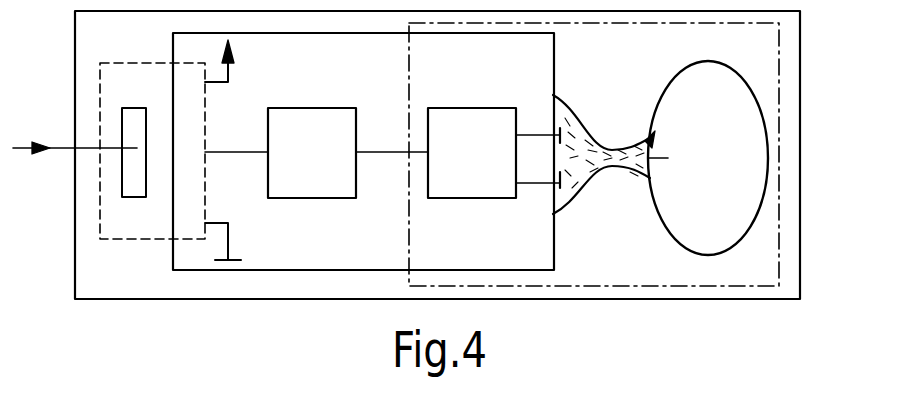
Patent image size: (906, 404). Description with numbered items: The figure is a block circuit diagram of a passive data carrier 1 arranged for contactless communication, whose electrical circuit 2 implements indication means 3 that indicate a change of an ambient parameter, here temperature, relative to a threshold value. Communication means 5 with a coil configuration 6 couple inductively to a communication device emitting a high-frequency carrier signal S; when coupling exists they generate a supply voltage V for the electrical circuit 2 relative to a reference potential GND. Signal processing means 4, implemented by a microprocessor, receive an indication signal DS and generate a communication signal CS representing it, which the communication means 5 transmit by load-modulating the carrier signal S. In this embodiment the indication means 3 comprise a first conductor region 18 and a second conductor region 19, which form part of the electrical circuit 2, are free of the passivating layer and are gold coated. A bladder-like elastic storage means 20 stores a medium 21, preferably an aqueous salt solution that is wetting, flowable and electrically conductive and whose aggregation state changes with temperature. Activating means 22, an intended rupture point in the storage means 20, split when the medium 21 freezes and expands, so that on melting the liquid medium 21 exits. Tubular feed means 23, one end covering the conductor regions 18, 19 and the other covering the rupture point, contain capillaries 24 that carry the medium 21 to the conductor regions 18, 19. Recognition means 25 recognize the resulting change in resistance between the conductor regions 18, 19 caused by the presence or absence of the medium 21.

The data carrier 1 is at (310, 306).
The electrical circuit 2 is at (173, 262).
The indication means 3 is at (400, 249).
The signal processing means 4 is at (335, 137).
The communication means 5 is at (153, 63).
The coil configuration 6 is at (123, 107).
The first conductor region 18 is at (565, 118).
The second conductor region 19 is at (558, 212).
The storage means 20 is at (657, 92).
The medium 21 is at (725, 128).
The activating means 22 is at (668, 158).
The feed means 23 is at (612, 172).
The capillaries 24 is at (614, 148).
The recognition means 25 is at (453, 137).
The high-frequency carrier signal S is at (27, 147).
The supply voltage V is at (230, 72).
The reference potential GND is at (230, 250).
The communication signal CS is at (248, 152).
The indication signal DS is at (378, 152).